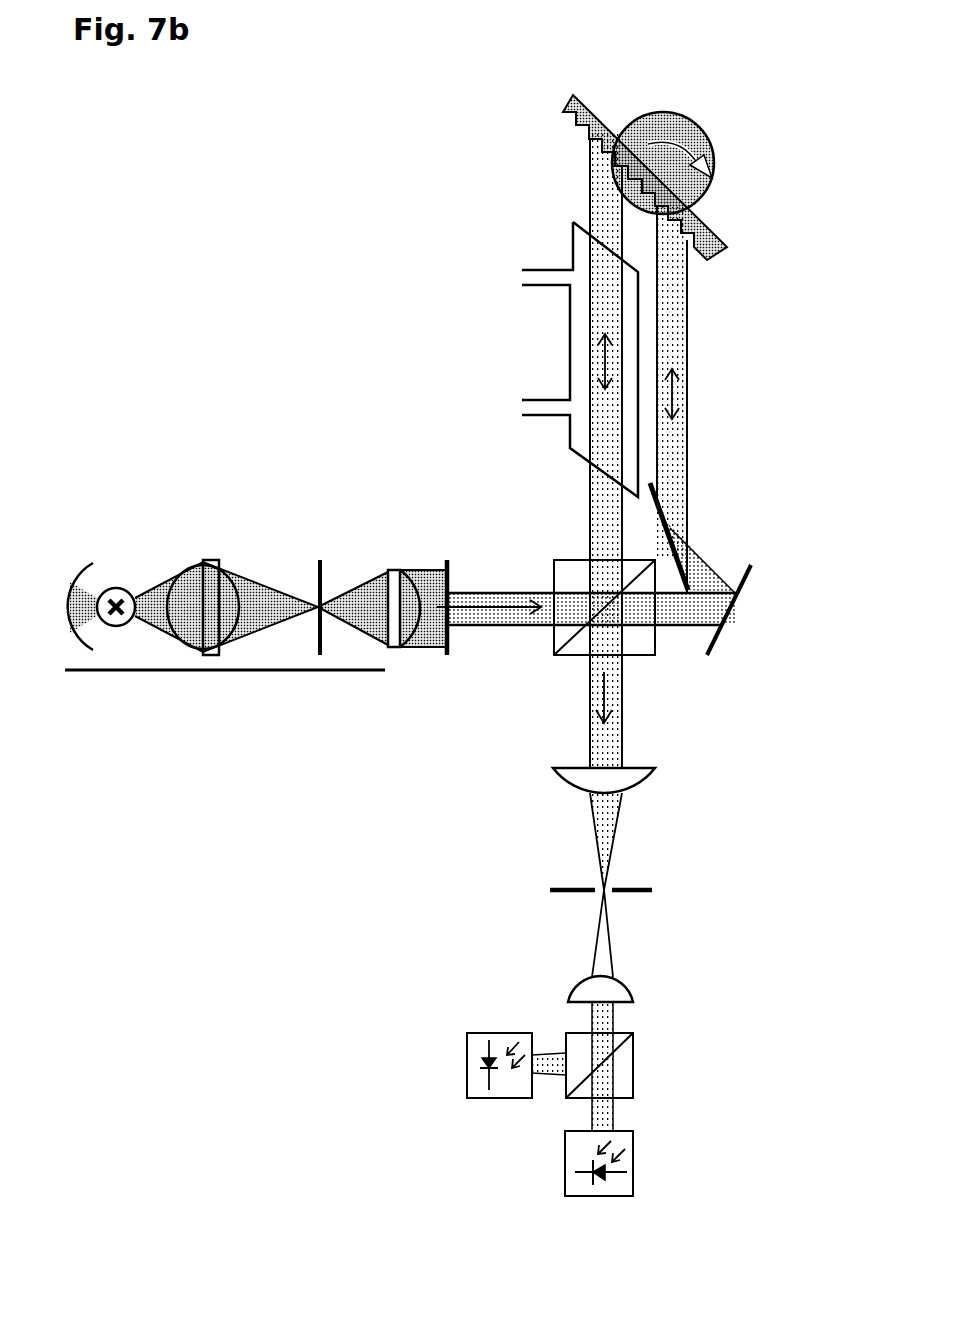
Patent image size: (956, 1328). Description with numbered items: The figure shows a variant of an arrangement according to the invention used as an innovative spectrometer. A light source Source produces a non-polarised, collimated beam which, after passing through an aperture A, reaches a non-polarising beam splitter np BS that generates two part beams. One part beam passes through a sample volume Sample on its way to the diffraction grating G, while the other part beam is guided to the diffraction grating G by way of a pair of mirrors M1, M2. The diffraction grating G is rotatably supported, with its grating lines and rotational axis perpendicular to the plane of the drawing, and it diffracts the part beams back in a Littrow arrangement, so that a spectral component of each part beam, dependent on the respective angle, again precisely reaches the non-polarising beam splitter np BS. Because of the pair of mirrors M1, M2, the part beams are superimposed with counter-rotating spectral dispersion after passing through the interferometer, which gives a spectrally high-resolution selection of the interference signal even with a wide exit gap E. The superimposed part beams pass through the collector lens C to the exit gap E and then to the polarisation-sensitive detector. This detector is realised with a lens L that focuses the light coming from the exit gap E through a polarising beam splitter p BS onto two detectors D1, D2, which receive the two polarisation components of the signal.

The light source Source is at (225, 632).
The aperture A is at (431, 626).
The non-polarising beam splitter np BS is at (577, 627).
The mirror M1 is at (740, 612).
The mirror M2 is at (692, 538).
The diffraction grating G is at (663, 177).
The sample volume Sample is at (580, 359).
The collector lens C is at (614, 829).
The exit gap E is at (601, 877).
The lens L is at (609, 1011).
The polarising beam splitter p BS is at (631, 1065).
The detector D2 is at (483, 1081).
The detector D1 is at (573, 1179).